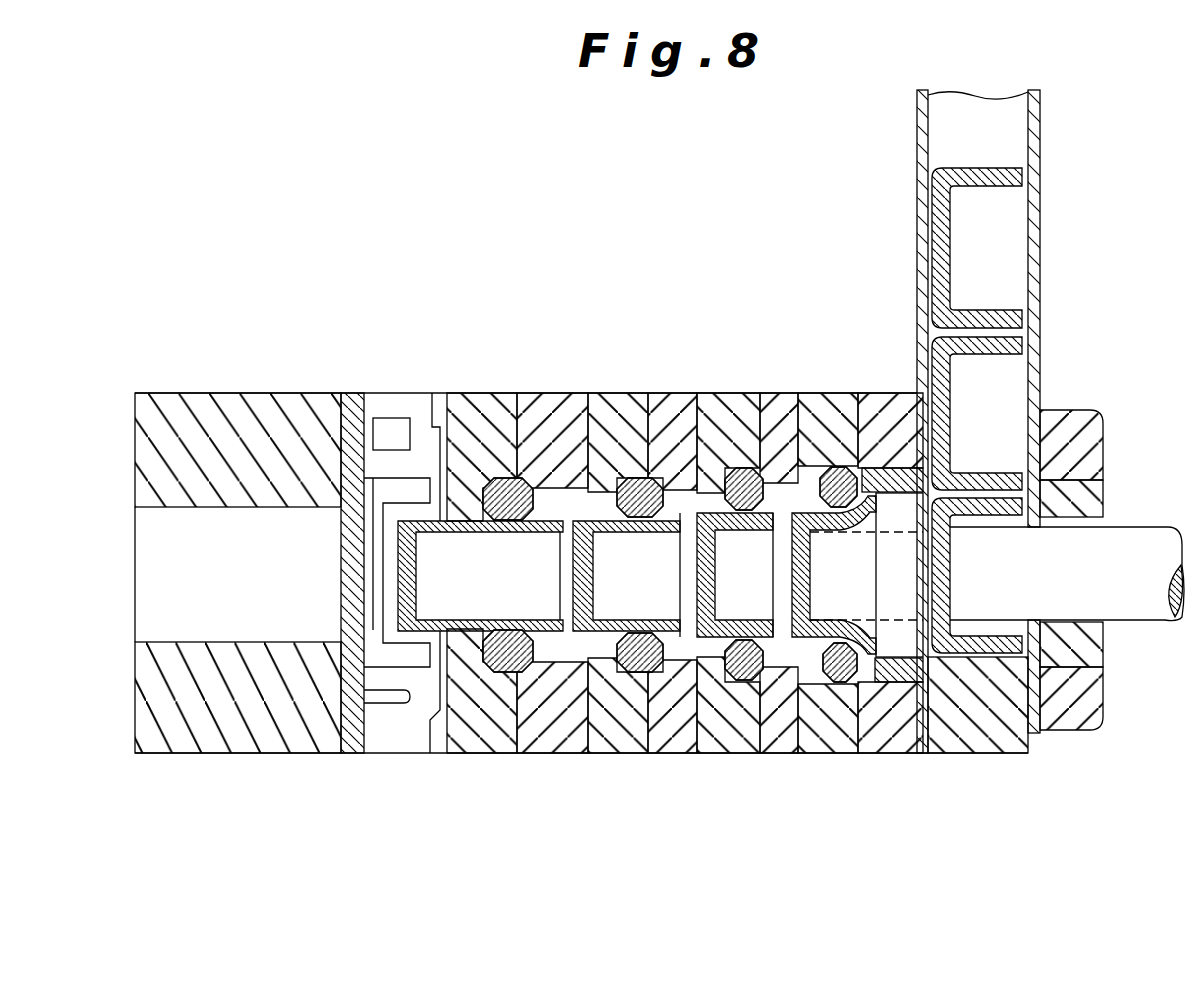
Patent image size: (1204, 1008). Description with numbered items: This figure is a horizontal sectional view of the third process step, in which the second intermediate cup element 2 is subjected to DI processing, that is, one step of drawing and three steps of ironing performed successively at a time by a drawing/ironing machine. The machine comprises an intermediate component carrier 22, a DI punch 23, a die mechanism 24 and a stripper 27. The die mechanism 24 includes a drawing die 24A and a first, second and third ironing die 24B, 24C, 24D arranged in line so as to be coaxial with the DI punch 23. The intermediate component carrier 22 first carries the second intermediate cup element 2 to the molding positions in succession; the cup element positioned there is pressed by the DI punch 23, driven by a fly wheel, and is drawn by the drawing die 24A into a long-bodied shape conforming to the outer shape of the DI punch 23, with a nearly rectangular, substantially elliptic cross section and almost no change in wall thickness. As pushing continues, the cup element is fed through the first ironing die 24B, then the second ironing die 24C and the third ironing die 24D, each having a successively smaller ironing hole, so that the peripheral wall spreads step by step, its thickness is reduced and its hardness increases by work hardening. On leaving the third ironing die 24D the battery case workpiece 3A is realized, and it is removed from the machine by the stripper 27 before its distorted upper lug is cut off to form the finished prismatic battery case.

The second intermediate cup element 2 is at (962, 170).
The battery case workpiece 3A is at (398, 566).
The intermediate component carrier 22 is at (1040, 238).
The DI punch 23 is at (1118, 547).
The die mechanism 24 is at (877, 815).
The drawing die 24A is at (843, 681).
The first ironing die 24B is at (740, 678).
The second ironing die 24C is at (630, 672).
The third ironing die 24D is at (491, 668).
The stripper 27 is at (362, 668).